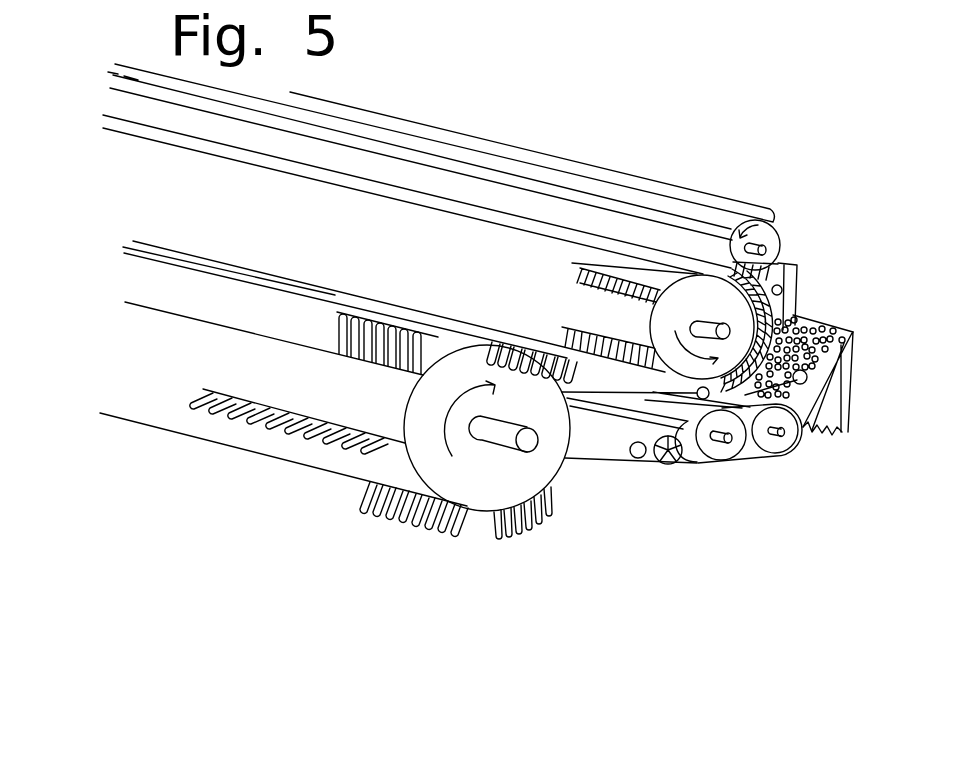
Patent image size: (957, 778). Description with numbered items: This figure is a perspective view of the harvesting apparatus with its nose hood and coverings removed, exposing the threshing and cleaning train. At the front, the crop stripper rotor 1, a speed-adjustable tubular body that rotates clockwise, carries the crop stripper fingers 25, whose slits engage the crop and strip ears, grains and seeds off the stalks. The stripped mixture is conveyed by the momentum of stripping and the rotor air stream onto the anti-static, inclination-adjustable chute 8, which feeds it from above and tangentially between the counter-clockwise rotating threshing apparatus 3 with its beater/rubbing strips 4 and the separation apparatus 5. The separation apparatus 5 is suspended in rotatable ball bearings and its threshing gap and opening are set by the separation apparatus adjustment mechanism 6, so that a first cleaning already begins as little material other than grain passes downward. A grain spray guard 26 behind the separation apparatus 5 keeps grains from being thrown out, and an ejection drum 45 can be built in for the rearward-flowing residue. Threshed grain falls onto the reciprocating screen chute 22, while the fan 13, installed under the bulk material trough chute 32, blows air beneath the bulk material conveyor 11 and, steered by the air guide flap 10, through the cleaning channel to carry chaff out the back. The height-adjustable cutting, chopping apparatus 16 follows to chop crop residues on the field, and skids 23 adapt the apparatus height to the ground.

The crop stripper rotor 1 is at (543, 470).
The threshing apparatus 3 is at (713, 301).
The beater/rubbing strips 4 is at (573, 277).
The separation apparatus 5 is at (773, 311).
The separation apparatus adjustment mechanism 6 is at (782, 290).
The chute 8 is at (609, 378).
The air guide flap 10 is at (623, 420).
The bulk material conveyor 11 is at (793, 450).
The fan 13 is at (693, 463).
The cutting, chopping apparatus 16 is at (850, 436).
The screen chute 22 is at (807, 371).
The skids 23 is at (603, 450).
The crop stripper fingers 25 is at (463, 530).
The grain spray guard 26 is at (833, 340).
The bulk material trough chute 32 is at (800, 394).
The ejection drum 45 is at (772, 232).